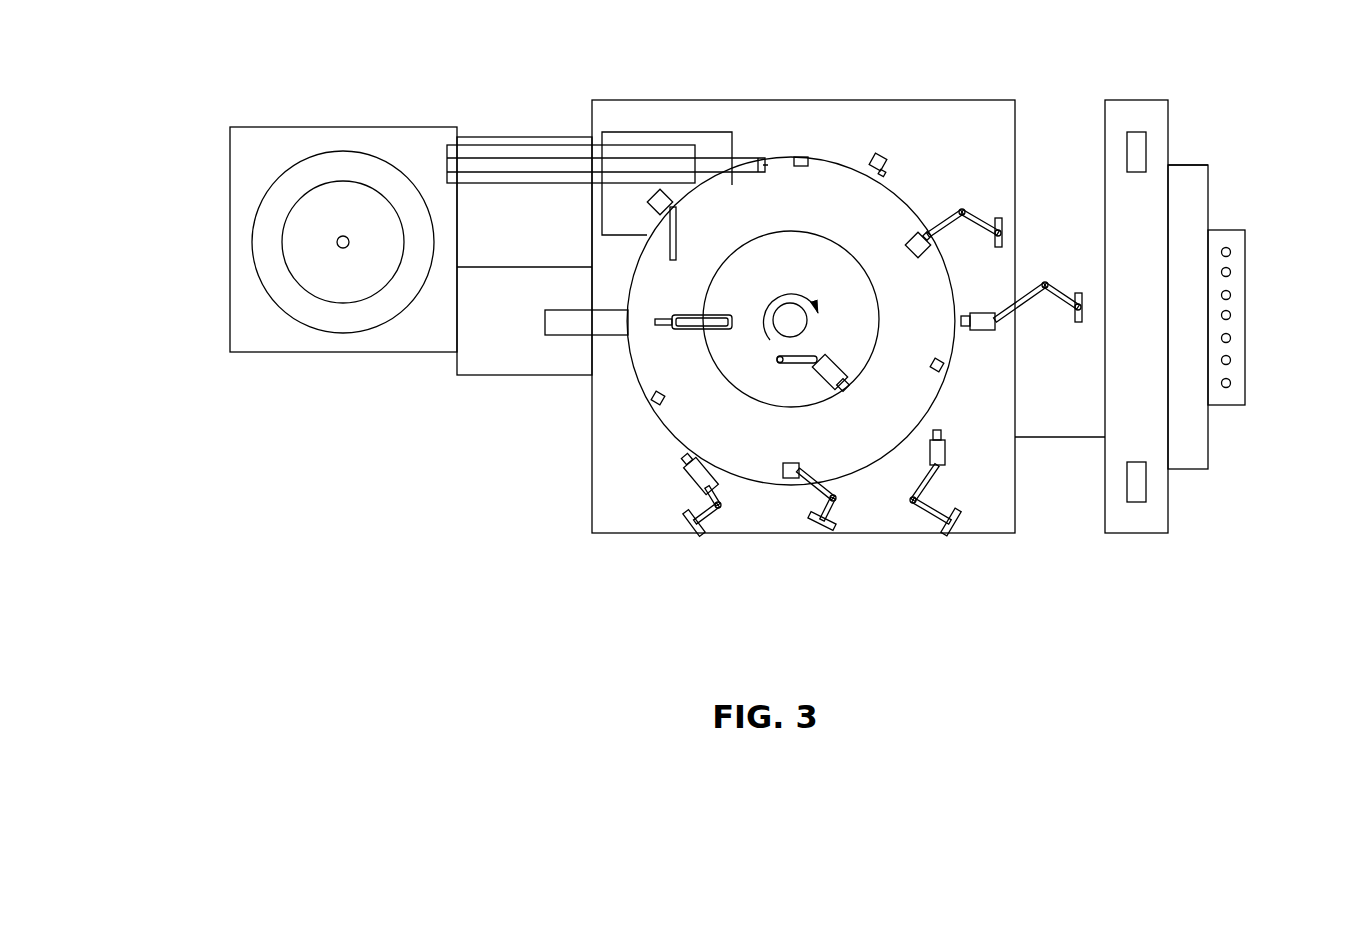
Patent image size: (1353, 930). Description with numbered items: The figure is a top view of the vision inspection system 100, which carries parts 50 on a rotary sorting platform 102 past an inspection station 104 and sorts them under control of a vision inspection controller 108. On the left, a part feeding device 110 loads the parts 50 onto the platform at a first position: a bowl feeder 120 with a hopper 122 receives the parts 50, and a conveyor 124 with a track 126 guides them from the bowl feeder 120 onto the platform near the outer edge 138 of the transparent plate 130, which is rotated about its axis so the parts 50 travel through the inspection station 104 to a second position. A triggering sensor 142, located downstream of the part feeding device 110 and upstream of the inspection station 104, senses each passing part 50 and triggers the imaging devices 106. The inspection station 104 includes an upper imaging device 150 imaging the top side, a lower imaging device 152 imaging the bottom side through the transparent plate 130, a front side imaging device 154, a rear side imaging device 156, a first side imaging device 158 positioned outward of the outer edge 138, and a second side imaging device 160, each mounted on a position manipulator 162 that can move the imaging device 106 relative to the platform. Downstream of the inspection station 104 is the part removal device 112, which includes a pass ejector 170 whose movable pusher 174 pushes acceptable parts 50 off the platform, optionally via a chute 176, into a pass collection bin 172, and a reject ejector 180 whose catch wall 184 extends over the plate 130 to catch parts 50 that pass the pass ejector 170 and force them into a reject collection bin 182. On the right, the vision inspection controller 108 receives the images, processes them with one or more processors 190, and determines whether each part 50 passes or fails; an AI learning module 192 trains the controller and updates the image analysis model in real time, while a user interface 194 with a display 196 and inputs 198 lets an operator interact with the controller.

The part 50 is at (801, 157).
The vision inspection system 100 is at (360, 483).
The rotary sorting platform 102 is at (682, 423).
The inspection station 104 is at (978, 479).
The imaging device 106 is at (1005, 504).
The vision inspection controller 108 is at (1150, 536).
The part feeding device 110 is at (467, 126).
The part removal device 112 is at (530, 383).
The bowl feeder 120 is at (268, 270).
The hopper 122 is at (308, 222).
The conveyor 124 is at (523, 142).
The track 126 is at (741, 168).
The transparent plate 130 is at (893, 193).
The outer edge 138 is at (882, 213).
The triggering sensor 142 is at (878, 152).
The upper imaging device 150 is at (790, 478).
The lower imaging device 152 is at (917, 225).
The front side imaging device 154 is at (947, 443).
The rear side imaging device 156 is at (687, 493).
The first side imaging device 158 is at (980, 312).
The second side imaging device 160 is at (827, 373).
The position manipulator 162 is at (925, 517).
The pass ejector 170 is at (715, 330).
The pass collection bin 172 is at (480, 372).
The movable pusher 174 is at (653, 318).
The chute 176 is at (580, 338).
The reject ejector 180 is at (690, 211).
The reject collection bin 182 is at (600, 217).
The catch wall 184 is at (671, 247).
The processor 190 is at (1140, 153).
The AI learning module 192 is at (1146, 480).
The user interface 194 is at (1213, 472).
The display 196 is at (1189, 172).
The input 198 is at (1228, 233).